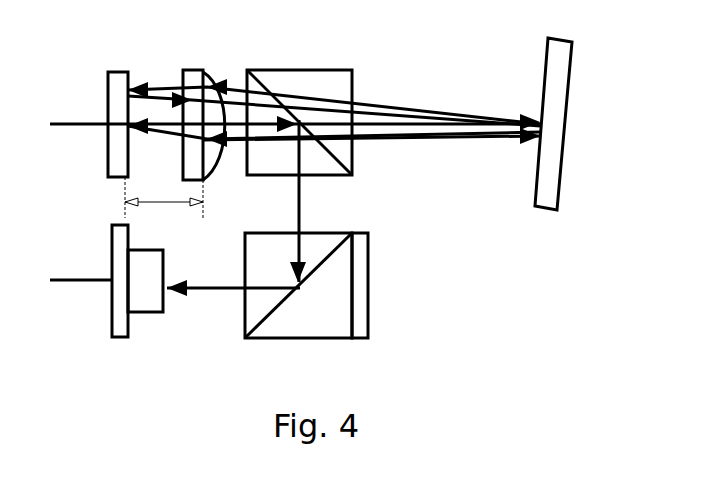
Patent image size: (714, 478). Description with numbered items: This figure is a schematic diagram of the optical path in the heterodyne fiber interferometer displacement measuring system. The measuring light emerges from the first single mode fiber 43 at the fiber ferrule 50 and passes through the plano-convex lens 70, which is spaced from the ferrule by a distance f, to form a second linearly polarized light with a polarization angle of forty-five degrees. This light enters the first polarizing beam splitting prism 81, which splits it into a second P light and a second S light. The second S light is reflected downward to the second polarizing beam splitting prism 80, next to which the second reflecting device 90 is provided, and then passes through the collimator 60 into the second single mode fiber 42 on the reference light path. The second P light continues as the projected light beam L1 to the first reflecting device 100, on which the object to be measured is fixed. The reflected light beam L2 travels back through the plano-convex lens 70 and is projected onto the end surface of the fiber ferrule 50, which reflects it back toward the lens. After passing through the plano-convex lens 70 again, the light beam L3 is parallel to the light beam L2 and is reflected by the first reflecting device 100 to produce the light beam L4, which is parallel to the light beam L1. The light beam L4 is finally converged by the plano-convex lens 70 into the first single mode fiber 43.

The second single mode fiber 42 is at (82, 282).
The first single mode fiber 43 is at (77, 122).
The fiber ferrule 50 is at (118, 72).
The collimator 60 is at (145, 312).
The plano-convex lens 70 is at (197, 70).
The second polarizing beam splitting prism 80 is at (300, 340).
The first polarizing beam splitting prism 81 is at (293, 70).
The second reflecting device 90 is at (360, 340).
The first reflecting device 100 is at (568, 68).
The projected light beam L1 is at (449, 110).
The reflected light beam L2 is at (393, 104).
The light beam L3 is at (455, 139).
The light beam L4 is at (392, 140).
The focal length f is at (164, 197).